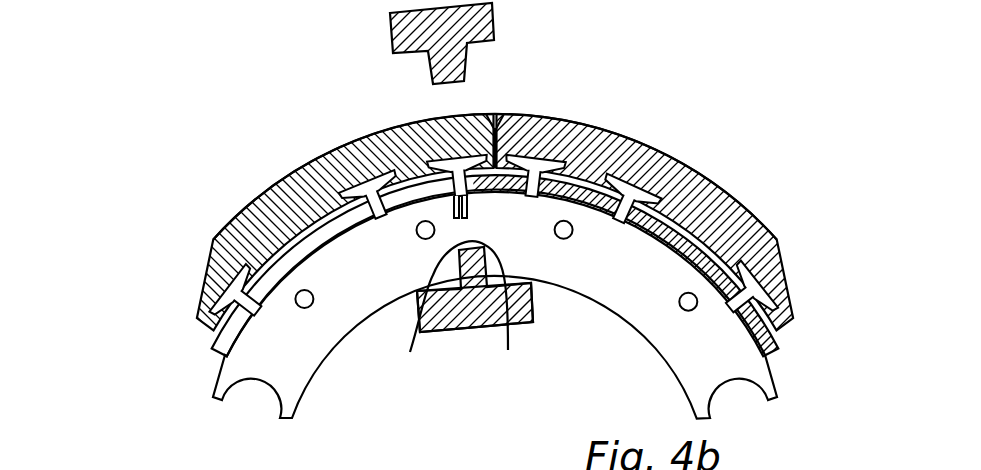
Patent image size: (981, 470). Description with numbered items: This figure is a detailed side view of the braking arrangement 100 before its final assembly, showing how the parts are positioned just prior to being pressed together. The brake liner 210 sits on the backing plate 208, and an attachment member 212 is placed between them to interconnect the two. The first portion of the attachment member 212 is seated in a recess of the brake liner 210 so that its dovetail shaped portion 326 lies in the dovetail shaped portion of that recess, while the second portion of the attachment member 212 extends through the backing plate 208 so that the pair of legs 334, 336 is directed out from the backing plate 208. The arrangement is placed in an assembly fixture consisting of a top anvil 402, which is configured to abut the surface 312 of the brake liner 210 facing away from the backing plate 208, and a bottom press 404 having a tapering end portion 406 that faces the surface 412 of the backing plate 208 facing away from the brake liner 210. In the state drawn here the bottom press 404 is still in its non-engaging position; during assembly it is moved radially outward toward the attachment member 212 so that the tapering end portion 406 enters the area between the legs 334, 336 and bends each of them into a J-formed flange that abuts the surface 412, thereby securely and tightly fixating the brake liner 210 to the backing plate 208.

The braking arrangement 100 is at (825, 195).
The backing plate 208 is at (773, 352).
The brake liner 210 is at (580, 133).
The attachment member 212 is at (400, 153).
The surface of the brake liner 312 is at (683, 160).
The dovetail shaped portion 326 is at (466, 154).
The leg 334 is at (418, 333).
The leg 336 is at (470, 195).
The top anvil 402 is at (477, 22).
The bottom press 404 is at (477, 313).
The tapering end portion 406 is at (500, 323).
The surface of the backing plate 412 is at (393, 213).